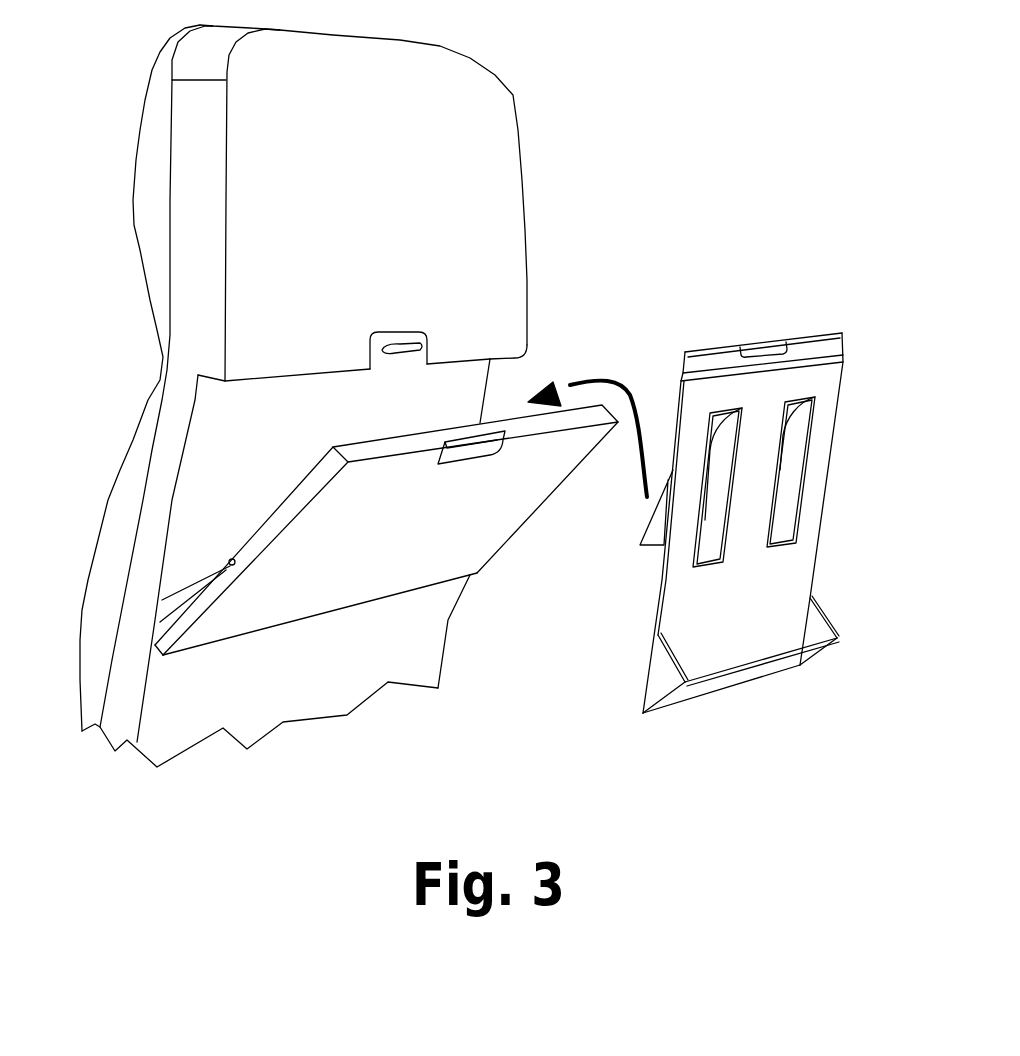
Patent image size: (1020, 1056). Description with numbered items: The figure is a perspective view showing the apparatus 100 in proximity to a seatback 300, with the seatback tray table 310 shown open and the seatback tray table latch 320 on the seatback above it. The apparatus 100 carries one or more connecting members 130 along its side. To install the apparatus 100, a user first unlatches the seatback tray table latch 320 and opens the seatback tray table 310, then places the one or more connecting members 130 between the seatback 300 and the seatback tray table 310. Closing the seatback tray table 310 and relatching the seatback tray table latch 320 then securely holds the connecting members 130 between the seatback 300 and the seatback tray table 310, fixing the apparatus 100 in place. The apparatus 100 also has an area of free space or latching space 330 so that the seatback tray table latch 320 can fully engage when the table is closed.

The apparatus 100 is at (842, 300).
The connecting member 130 is at (653, 543).
The seatback 300 is at (521, 96).
The seatback tray table 310 is at (440, 553).
The seatback tray table latch 320 is at (416, 343).
The latching space 330 is at (770, 352).